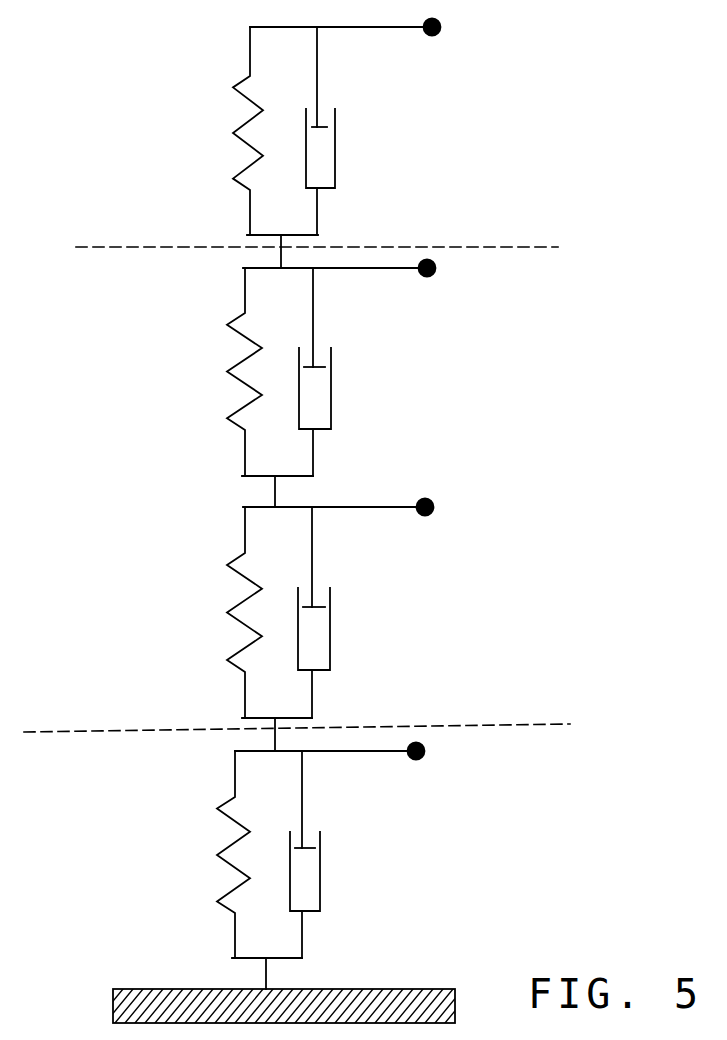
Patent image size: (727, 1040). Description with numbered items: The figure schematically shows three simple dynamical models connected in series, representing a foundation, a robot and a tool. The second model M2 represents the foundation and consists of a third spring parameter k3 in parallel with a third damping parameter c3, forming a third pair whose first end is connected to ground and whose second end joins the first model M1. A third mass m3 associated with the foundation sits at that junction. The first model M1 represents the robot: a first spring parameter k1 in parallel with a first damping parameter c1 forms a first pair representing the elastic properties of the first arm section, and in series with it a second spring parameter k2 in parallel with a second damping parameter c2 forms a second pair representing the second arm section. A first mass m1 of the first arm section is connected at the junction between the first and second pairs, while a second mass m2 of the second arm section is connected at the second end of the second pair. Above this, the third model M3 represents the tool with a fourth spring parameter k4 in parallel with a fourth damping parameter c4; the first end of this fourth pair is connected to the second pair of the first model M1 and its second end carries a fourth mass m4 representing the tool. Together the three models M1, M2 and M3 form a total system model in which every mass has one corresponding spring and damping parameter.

The first model M1 is at (168, 488).
The second model M2 is at (297, 793).
The third model M3 is at (311, 194).
The first mass m1 is at (372, 515).
The second mass m2 is at (360, 277).
The third mass m3 is at (356, 753).
The fourth mass m4 is at (376, 22).
The first spring parameter k1 is at (236, 612).
The second spring parameter k2 is at (242, 372).
The third spring parameter k3 is at (234, 854).
The fourth spring parameter k4 is at (250, 131).
The first damping parameter c1 is at (345, 612).
The second damping parameter c2 is at (343, 372).
The third damping parameter c3 is at (340, 854).
The fourth damping parameter c4 is at (357, 131).